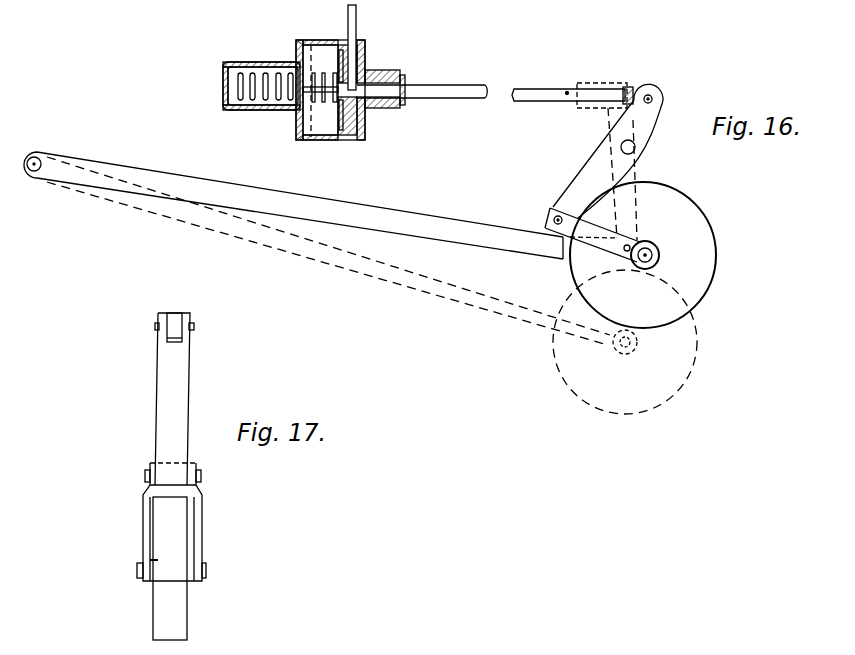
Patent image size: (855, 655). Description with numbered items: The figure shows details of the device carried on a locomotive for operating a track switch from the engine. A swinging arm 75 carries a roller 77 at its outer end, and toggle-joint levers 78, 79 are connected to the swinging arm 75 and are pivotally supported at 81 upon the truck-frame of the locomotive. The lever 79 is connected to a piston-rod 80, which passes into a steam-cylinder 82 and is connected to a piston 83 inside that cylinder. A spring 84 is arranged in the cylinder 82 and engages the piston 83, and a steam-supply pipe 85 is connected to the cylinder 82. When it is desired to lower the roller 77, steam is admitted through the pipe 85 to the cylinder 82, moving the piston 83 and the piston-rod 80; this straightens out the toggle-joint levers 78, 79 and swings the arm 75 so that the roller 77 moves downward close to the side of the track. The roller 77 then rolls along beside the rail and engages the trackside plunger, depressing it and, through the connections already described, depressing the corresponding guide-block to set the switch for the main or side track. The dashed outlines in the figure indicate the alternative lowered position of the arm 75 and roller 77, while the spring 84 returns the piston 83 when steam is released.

In FIG. 16, the swinging arm 75 is at (407, 218).
In FIG. 17, the swinging arm 75 is at (187, 553).
In FIG. 16, the roller 77 is at (700, 237).
In FIG. 17, the roller 77 is at (175, 602).
In FIG. 16, the toggle-joint lever 78 is at (585, 243).
In FIG. 17, the toggle-joint lever 78 is at (147, 520).
In FIG. 16, the toggle-joint lever 79 is at (615, 162).
In FIG. 17, the toggle-joint lever 79 is at (175, 359).
In FIG. 16, the piston-rod 80 is at (518, 102).
In FIG. 17, the piston-rod 80 is at (171, 325).
In FIG. 16, the pivot 81 is at (637, 148).
In FIG. 16, the steam-cylinder 82 is at (327, 140).
In FIG. 16, the piston 83 is at (338, 51).
In FIG. 16, the spring 84 is at (256, 110).
In FIG. 16, the steam-supply pipe 85 is at (357, 15).